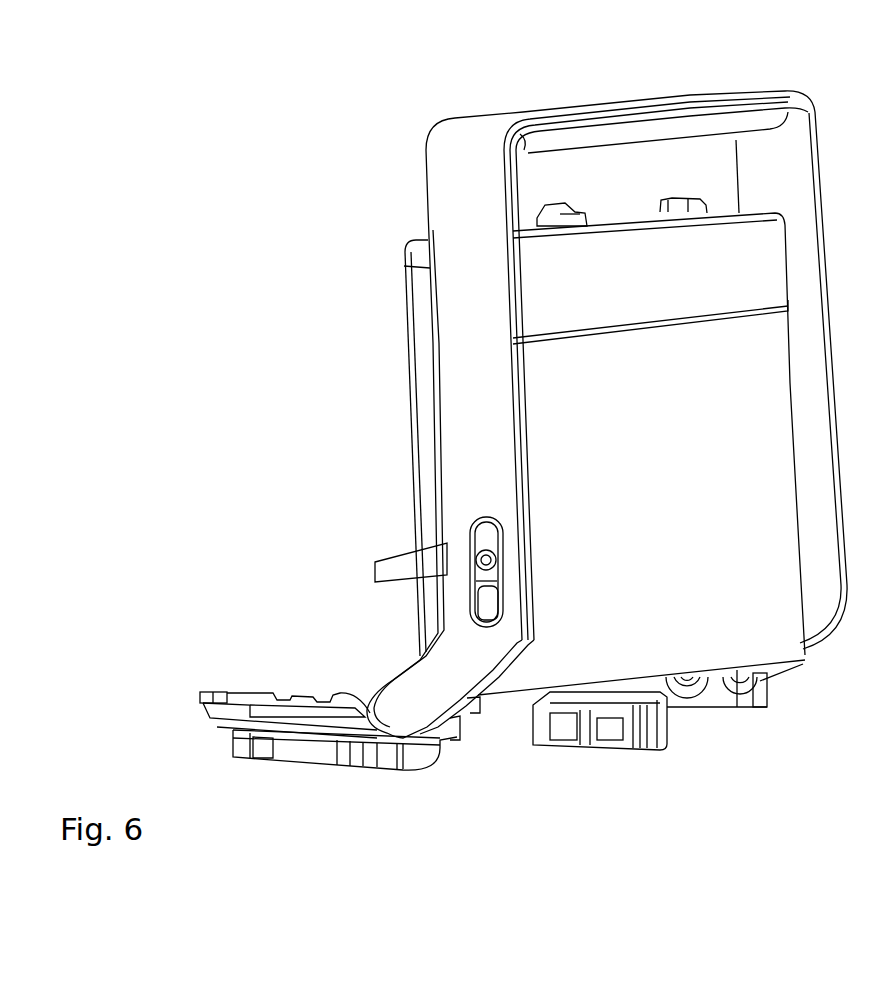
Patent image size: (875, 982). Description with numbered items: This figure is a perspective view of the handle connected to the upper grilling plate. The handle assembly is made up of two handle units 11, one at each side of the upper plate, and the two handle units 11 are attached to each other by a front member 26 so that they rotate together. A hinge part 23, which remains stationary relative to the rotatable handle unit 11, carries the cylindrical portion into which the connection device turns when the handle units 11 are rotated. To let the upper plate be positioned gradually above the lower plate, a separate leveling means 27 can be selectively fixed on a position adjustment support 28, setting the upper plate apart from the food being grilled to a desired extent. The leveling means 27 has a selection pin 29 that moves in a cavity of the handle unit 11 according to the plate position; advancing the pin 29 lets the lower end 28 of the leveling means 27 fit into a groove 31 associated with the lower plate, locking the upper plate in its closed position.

The handle unit 11 is at (462, 300).
The hinge part 23 is at (673, 742).
The front member 26 is at (608, 105).
The leveling means 27 is at (403, 563).
The position adjustment support 28 is at (310, 693).
The selection pin 29 is at (470, 552).
The groove 31 is at (203, 693).